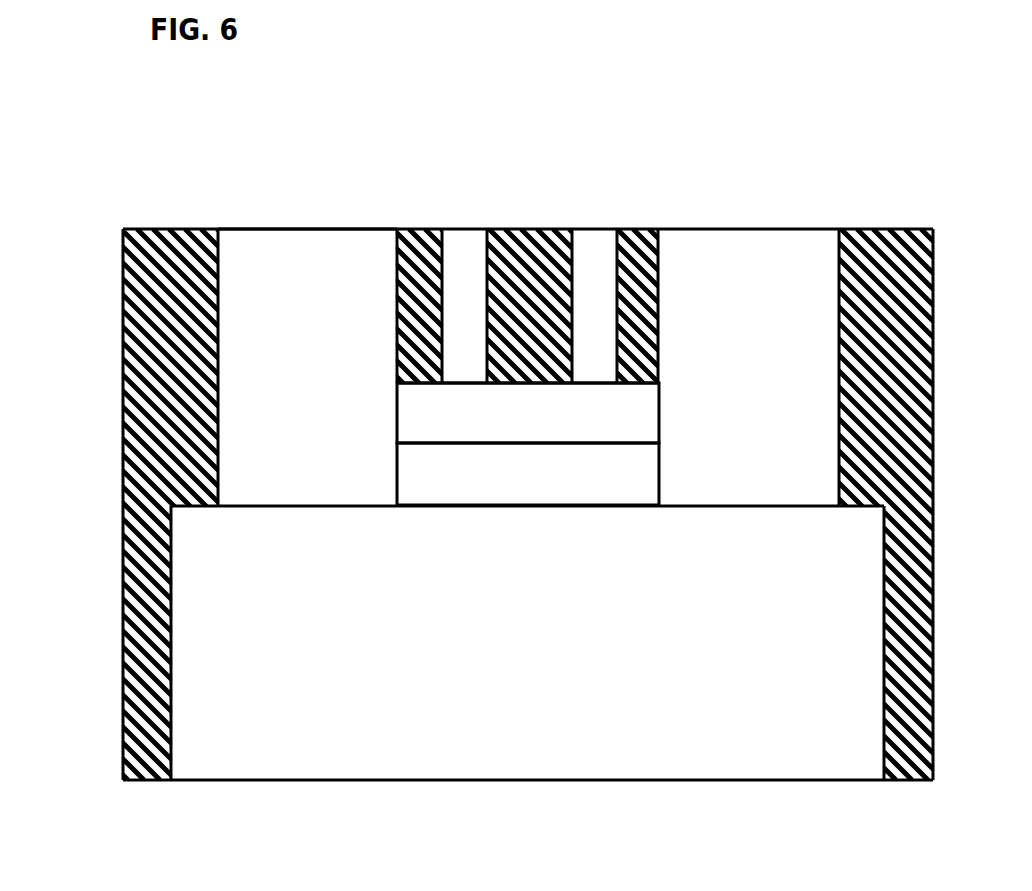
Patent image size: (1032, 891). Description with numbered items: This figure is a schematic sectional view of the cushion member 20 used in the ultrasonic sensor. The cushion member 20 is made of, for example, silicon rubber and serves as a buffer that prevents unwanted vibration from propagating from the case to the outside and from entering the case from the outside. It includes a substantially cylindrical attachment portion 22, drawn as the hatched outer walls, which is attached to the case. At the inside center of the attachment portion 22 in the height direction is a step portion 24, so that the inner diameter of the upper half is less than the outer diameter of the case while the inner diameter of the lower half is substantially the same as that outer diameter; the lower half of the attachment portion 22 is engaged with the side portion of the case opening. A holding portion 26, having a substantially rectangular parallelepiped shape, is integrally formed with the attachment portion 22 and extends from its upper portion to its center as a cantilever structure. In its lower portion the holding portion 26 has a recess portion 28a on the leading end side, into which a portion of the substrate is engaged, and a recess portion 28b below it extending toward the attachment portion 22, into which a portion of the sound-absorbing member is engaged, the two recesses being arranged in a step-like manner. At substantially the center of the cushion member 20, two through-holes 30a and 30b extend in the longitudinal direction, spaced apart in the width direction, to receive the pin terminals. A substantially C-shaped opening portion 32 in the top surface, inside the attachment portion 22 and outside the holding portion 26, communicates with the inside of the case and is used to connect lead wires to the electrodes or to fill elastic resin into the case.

The cushion member 20 is at (128, 224).
The attachment portion 22 is at (175, 228).
The step portion 24 is at (176, 506).
The holding portion 26 is at (528, 229).
The recess portion 28a is at (631, 413).
The recess portion 28b is at (631, 483).
The through-hole 30a is at (462, 285).
The through-hole 30b is at (596, 287).
The opening portion 32 is at (323, 340).